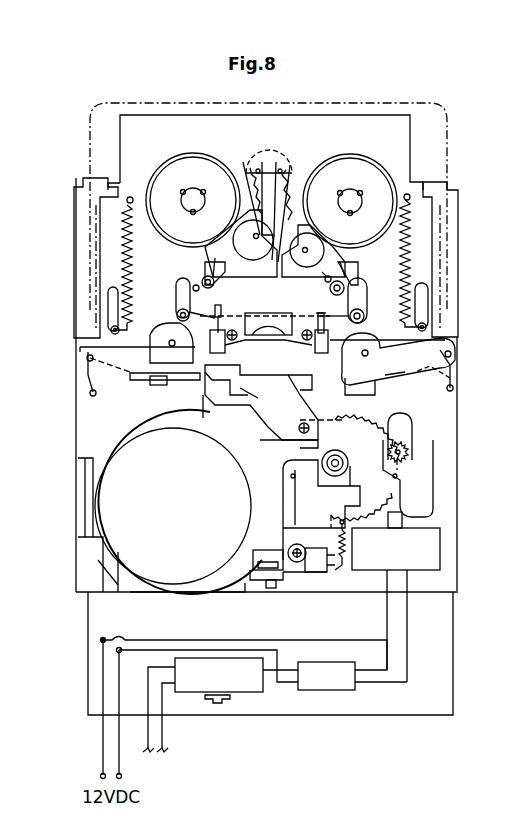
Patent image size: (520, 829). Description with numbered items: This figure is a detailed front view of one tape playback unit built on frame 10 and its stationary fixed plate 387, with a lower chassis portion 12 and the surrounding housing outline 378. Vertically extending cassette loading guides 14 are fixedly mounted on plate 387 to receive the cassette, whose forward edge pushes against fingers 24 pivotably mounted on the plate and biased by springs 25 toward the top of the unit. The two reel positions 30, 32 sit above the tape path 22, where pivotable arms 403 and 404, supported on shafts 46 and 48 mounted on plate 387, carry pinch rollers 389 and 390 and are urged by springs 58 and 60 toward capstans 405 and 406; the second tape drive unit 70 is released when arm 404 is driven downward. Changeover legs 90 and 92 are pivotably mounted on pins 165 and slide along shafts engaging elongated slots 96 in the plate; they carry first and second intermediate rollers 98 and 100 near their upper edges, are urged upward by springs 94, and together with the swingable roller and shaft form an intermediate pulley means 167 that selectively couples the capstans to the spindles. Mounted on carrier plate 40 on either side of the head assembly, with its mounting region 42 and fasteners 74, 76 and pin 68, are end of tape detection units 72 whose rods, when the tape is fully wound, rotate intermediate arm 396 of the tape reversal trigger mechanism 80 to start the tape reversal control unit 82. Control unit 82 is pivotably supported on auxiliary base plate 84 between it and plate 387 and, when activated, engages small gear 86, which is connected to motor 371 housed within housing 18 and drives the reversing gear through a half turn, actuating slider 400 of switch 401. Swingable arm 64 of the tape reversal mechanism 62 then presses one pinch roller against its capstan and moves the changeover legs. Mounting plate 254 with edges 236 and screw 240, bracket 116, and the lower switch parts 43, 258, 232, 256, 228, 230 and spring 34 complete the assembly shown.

The housing outline 378 is at (88, 135).
The cassette loading guides 14 is at (82, 233).
The springs 25 is at (127, 262).
The fingers 24 is at (112, 330).
The supply reel 30 is at (193, 188).
The take-up reel 32 is at (350, 189).
The springs 94 is at (268, 182).
The tape 22 is at (258, 178).
The intermediate pulley means 167 is at (278, 195).
The first intermediate roller 98 is at (275, 243).
The changeover leg 90 is at (236, 258).
The changeover leg 92 is at (352, 258).
The pins 165 is at (205, 280).
The elongated slots 96 is at (192, 286).
The capstan 405 is at (178, 310).
The capstan 406 is at (362, 318).
The carrier plate 40 is at (252, 318).
The head mount 42 is at (262, 313).
The second intermediate roller 100 is at (257, 308).
The pin 68 is at (298, 319).
The screw 74 is at (222, 362).
The screw 76 is at (312, 358).
The detection units 72 is at (268, 337).
The pinch roller 389 is at (80, 347).
The pivotable arm 403 is at (178, 368).
The shaft 46 is at (86, 365).
The spring 58 is at (133, 378).
The second tape drive unit 70 is at (398, 359).
The pinch roller 390 is at (455, 344).
The shaft 48 is at (452, 356).
The pivotable arm 404 is at (455, 380).
The bracket 116 is at (372, 385).
The spring 60 is at (395, 378).
The mounting plate 254 is at (261, 402).
The intermediate arm 396 is at (243, 394).
The screw 240 is at (287, 419).
The plate edge 236 is at (288, 435).
The tape reversal trigger mechanism 80 is at (234, 427).
The drum housing 18 is at (172, 430).
The motor 371 is at (173, 506).
The swingable arm 64 is at (254, 427).
The tape reversal mechanism 62 is at (262, 446).
The fixed plate 387 is at (459, 421).
The auxiliary base plate 84 is at (435, 490).
The small gear 86 is at (414, 452).
The tape reversal control unit 82 is at (362, 503).
The switch 401 is at (440, 555).
The slider 400 is at (402, 520).
The spring 34 is at (351, 555).
The switch 43 is at (268, 548).
The screw 258 is at (297, 563).
The block 232 is at (306, 565).
The edge 256 is at (305, 575).
The bracket 228 is at (252, 578).
The tab 230 is at (270, 590).
The chassis base 12 is at (93, 576).
The frame 10 is at (125, 579).